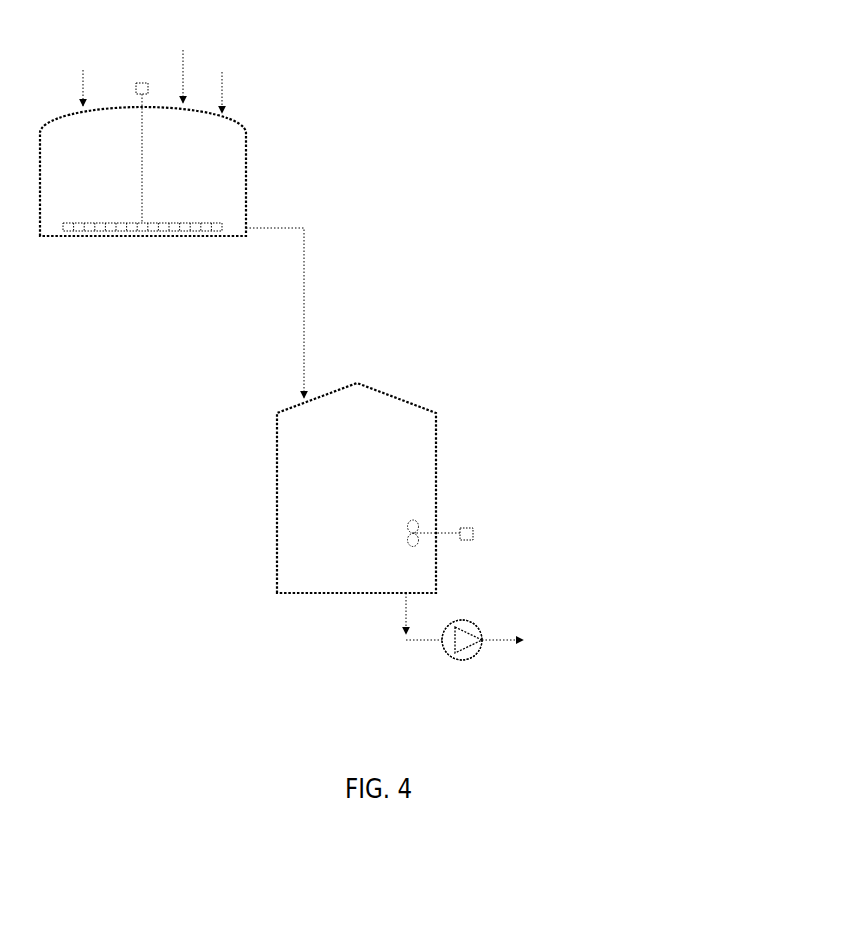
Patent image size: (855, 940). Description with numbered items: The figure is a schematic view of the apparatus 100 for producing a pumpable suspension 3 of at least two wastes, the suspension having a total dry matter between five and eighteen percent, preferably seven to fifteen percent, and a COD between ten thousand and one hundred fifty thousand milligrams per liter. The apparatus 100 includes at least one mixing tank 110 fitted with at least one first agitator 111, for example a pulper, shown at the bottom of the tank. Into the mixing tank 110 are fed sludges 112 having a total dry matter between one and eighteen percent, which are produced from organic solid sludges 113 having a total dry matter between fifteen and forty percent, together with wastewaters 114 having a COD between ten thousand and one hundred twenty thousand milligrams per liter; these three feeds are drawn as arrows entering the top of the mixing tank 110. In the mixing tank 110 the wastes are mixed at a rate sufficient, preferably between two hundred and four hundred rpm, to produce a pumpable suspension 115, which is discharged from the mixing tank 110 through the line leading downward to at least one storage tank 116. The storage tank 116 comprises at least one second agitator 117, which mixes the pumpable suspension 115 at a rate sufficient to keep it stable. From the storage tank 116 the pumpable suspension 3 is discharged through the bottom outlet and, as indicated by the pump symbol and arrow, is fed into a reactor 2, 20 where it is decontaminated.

The apparatus 100 is at (399, 168).
The mixing tank 110 is at (246, 157).
The first agitator 111 is at (163, 221).
The sludges 112 is at (182, 53).
The organic solid sludges 113 is at (83, 72).
The wastewaters 114 is at (235, 76).
The pumpable suspension 115 is at (305, 327).
The storage tank 116 is at (436, 472).
The second agitator 117 is at (428, 528).
The pumpable suspension 3 is at (405, 607).
The reactor 2 is at (491, 640).
The reactor 20 is at (462, 640).